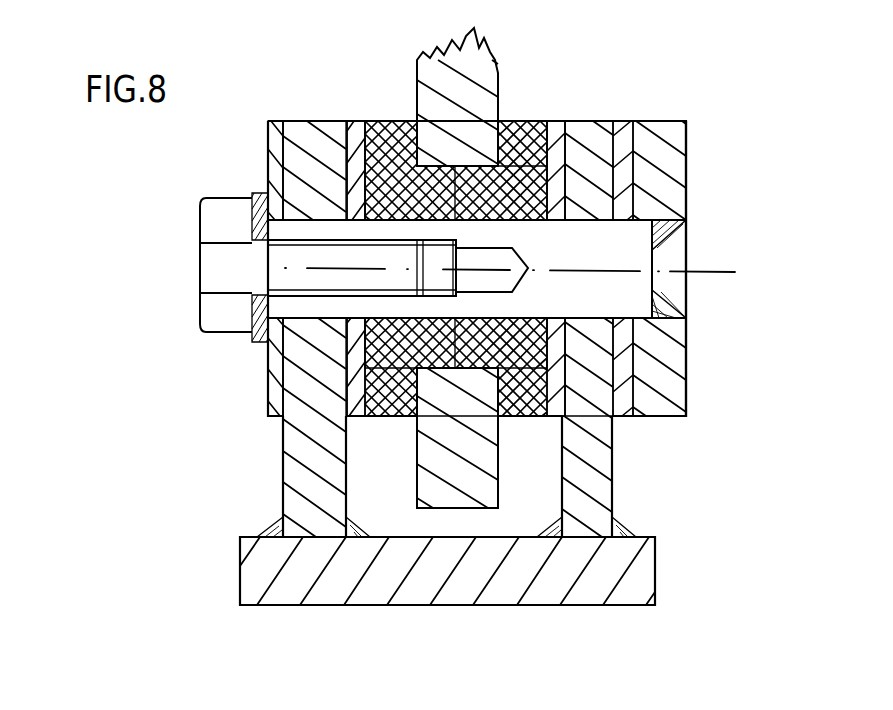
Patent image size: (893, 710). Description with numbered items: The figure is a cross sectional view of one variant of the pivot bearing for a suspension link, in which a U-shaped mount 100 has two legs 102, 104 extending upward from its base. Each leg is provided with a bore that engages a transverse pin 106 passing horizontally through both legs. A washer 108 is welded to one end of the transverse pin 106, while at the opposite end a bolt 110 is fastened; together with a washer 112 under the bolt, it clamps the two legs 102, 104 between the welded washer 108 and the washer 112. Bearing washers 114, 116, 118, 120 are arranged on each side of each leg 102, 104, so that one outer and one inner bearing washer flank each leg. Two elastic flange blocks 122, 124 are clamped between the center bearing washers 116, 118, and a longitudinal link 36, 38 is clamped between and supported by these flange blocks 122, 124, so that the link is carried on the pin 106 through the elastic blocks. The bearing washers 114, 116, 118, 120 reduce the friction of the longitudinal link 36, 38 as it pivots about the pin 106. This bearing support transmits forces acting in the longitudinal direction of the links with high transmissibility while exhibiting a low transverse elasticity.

The longitudinal link 36 is at (512, 268).
The longitudinal link 38 is at (474, 78).
The U-shaped mount 100 is at (365, 578).
The leg 102 is at (302, 137).
The leg 104 is at (590, 137).
The transverse pin 106 is at (622, 290).
The washer 108 is at (654, 399).
The bolt 110 is at (307, 259).
The washer 112 is at (257, 338).
The bearing washer 114 is at (273, 147).
The bearing washer 116 is at (355, 140).
The bearing washer 118 is at (557, 133).
The bearing washer 120 is at (647, 122).
The elastic flange block 122 is at (390, 130).
The elastic flange block 124 is at (528, 127).